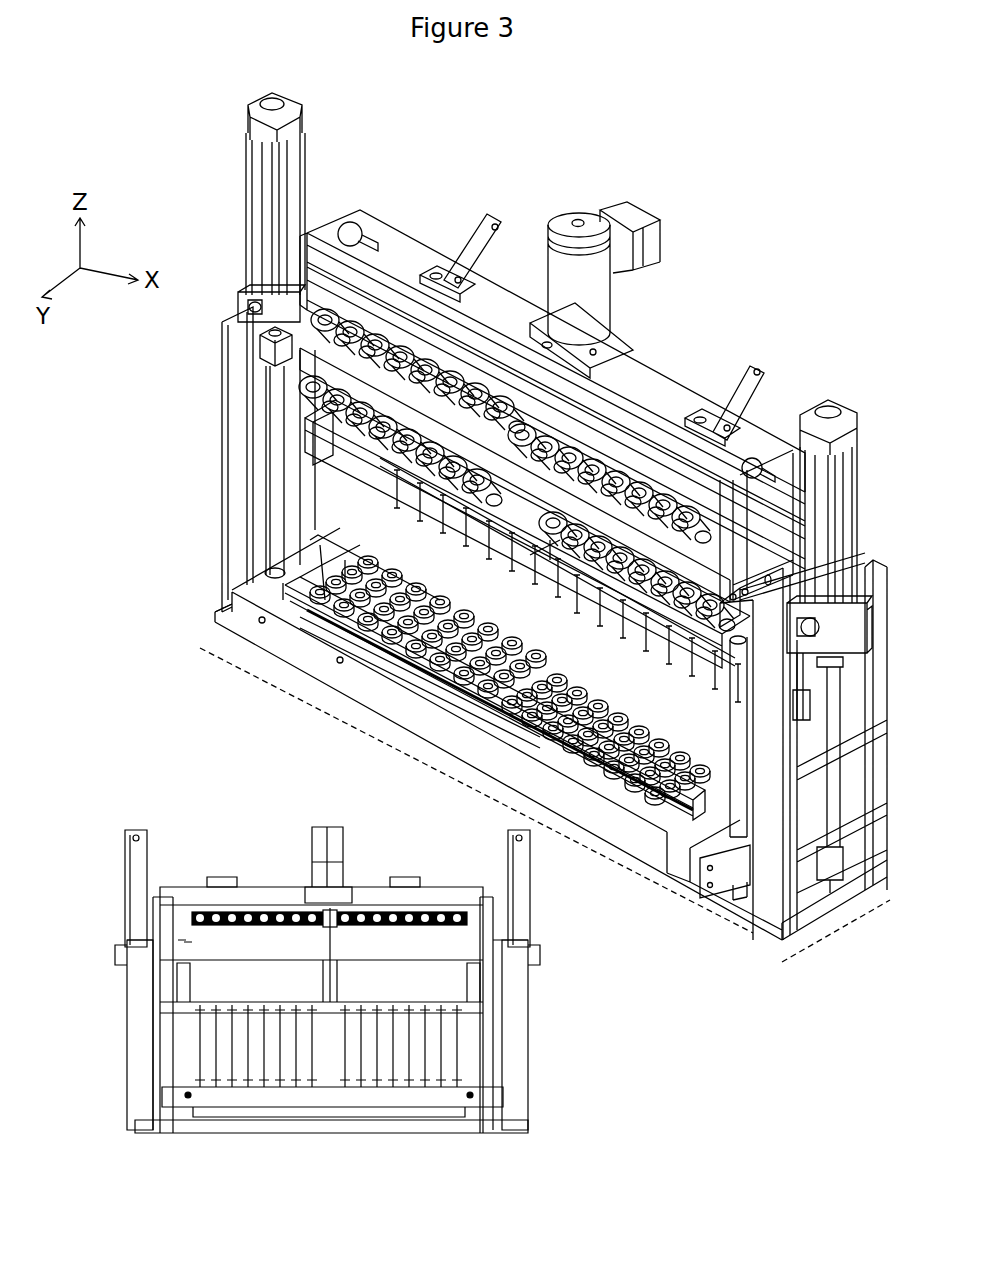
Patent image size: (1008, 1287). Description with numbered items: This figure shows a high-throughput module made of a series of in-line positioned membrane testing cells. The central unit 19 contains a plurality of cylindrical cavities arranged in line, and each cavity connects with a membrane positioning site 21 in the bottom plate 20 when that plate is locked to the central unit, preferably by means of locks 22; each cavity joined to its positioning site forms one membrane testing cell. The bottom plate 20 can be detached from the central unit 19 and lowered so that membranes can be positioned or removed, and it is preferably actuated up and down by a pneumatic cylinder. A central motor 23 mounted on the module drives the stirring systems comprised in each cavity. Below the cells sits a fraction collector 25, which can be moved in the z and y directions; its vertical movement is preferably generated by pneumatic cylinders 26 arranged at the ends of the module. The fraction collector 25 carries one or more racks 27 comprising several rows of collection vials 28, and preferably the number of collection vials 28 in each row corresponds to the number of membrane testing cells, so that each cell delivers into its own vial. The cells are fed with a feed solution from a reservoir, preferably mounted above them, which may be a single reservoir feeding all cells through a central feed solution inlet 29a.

The central unit 19 is at (514, 410).
The bottom plate 20 is at (335, 438).
The membrane positioning site 21 is at (490, 497).
The locks 22 is at (752, 378).
The central motor 23 is at (643, 247).
The fraction collector 25 is at (282, 630).
The pneumatic cylinders 26 is at (262, 172).
The racks 27 is at (493, 693).
The collection vials 28 is at (373, 635).
The central feed solution inlet 29a is at (493, 387).